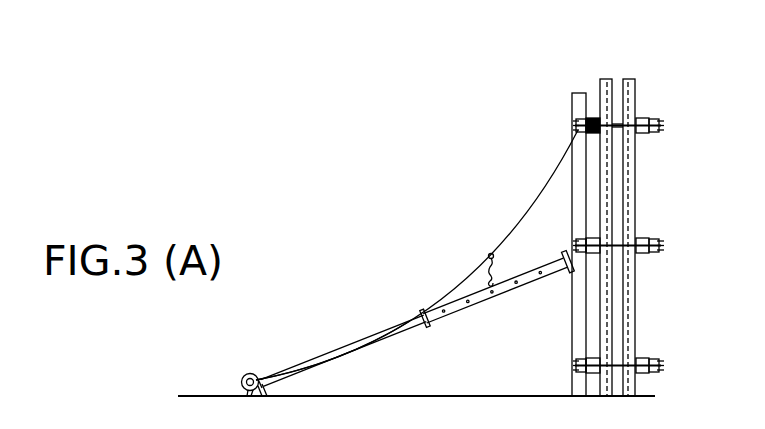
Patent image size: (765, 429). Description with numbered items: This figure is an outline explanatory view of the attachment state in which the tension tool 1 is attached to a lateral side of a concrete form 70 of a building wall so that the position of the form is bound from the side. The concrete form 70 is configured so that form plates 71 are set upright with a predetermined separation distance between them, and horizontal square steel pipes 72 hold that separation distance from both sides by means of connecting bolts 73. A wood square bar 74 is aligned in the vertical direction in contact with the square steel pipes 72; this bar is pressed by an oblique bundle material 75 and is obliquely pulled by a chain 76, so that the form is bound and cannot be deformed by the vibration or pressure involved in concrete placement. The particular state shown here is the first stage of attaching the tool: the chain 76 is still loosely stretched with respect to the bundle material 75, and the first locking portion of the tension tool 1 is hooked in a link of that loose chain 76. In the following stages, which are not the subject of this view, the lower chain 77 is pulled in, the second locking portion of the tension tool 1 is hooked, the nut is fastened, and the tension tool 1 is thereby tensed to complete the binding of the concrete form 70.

The tension tool 1 is at (486, 272).
The concrete form 70 is at (562, 74).
The form plates 71 is at (606, 78).
The horizontal square steel pipes 72 is at (592, 118).
The connecting bolts 73 is at (618, 128).
The wood square bar 74 is at (578, 108).
The oblique bundle material 75 is at (462, 308).
The chain 76 is at (547, 192).
The lower chain 77 is at (435, 300).